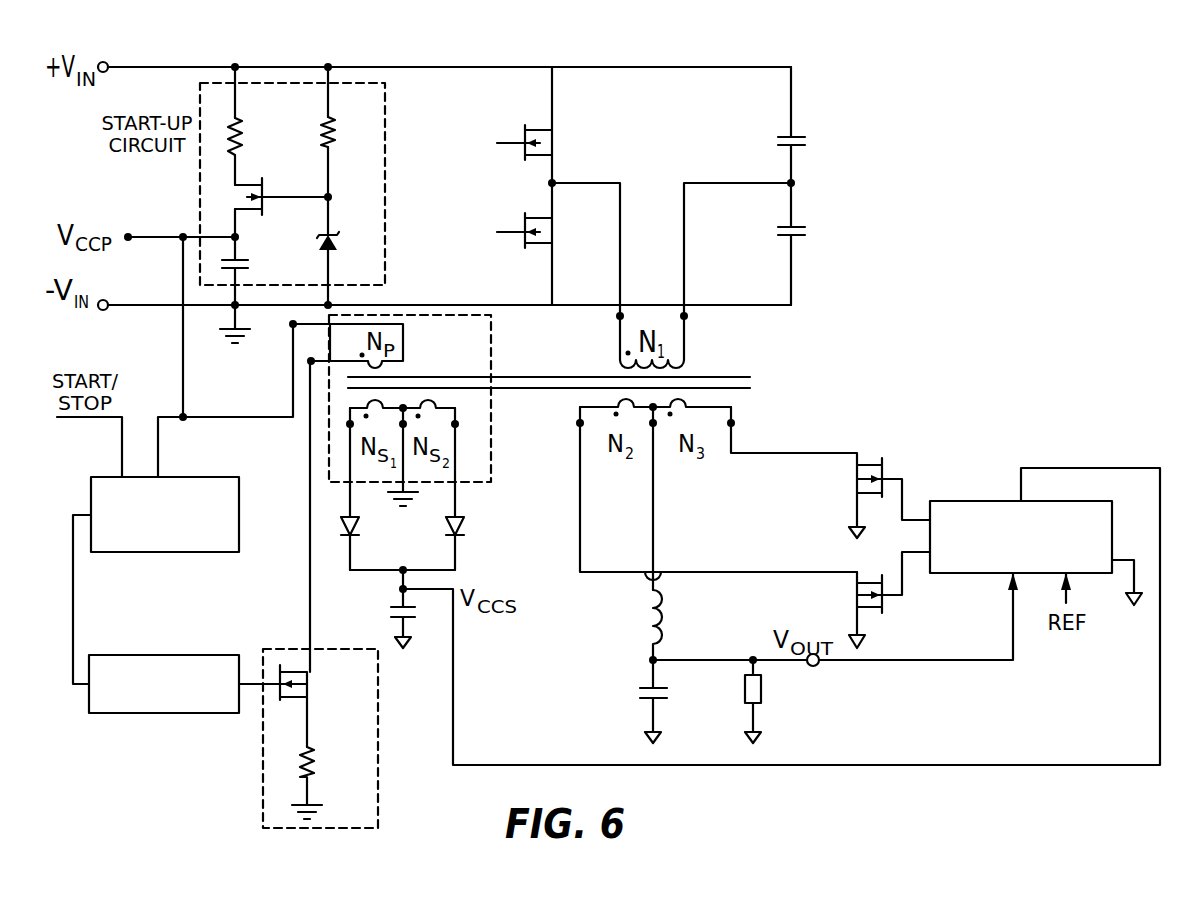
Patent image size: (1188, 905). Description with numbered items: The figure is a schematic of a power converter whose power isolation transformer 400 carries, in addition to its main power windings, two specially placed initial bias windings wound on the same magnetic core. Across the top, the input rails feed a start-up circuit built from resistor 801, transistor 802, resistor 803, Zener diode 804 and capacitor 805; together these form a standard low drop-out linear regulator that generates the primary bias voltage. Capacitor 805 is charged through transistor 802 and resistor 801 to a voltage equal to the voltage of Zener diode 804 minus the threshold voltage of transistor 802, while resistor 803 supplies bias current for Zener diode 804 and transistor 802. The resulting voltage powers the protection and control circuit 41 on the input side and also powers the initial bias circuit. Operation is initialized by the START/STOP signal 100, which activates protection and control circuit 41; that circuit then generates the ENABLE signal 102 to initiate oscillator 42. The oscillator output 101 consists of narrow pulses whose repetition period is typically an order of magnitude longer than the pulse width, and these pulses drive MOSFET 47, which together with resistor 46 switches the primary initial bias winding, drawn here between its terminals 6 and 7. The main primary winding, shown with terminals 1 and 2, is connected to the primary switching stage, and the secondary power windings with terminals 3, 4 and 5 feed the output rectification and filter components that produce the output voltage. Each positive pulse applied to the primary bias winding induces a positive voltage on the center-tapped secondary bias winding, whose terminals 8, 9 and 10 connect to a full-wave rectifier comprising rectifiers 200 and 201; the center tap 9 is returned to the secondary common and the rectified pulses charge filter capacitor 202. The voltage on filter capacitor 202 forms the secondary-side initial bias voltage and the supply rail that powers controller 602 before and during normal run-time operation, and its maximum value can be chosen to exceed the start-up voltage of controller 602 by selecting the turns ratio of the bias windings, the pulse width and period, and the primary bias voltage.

The resistor 801 is at (250, 147).
The transistor 802 is at (262, 187).
The resistor 803 is at (336, 130).
The Zener diode 804 is at (338, 243).
The capacitor 805 is at (248, 267).
The primary winding terminal 6 is at (293, 337).
The primary winding terminal 7 is at (313, 374).
The secondary winding terminal 8 is at (344, 424).
The secondary winding center tap terminal 9 is at (397, 424).
The secondary winding terminal 10 is at (467, 424).
The primary winding N1 terminal 1 is at (612, 320).
The primary winding N1 terminal 2 is at (694, 320).
The secondary winding N2 terminal 3 is at (572, 425).
The secondary winding center tap terminal 4 is at (646, 425).
The secondary winding N3 terminal 5 is at (740, 425).
The START/STOP signal 100 is at (120, 433).
The protection and control circuit 41 is at (240, 515).
The ENABLE signal 102 is at (73, 618).
The oscillator 42 is at (182, 655).
The oscillator output 101 is at (252, 686).
The MOSFET 47 is at (309, 677).
The resistor 46 is at (311, 770).
The rectifier 200 is at (360, 527).
The rectifier 201 is at (465, 527).
The filter capacitor 202 is at (392, 609).
The power isolation transformer 400 is at (748, 383).
The controller 602 is at (993, 500).